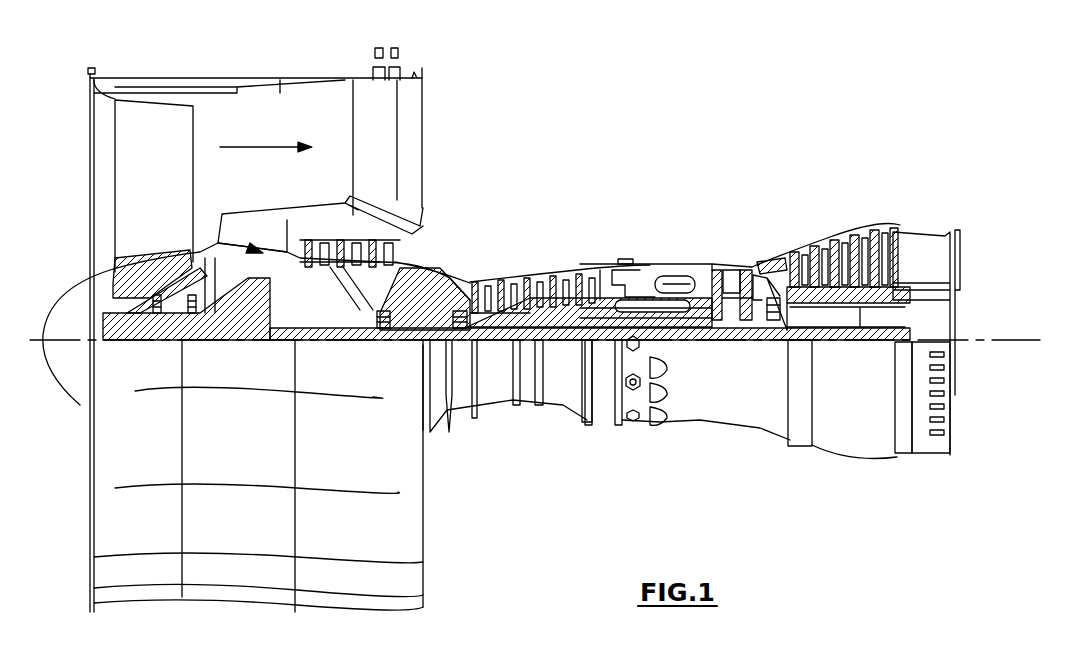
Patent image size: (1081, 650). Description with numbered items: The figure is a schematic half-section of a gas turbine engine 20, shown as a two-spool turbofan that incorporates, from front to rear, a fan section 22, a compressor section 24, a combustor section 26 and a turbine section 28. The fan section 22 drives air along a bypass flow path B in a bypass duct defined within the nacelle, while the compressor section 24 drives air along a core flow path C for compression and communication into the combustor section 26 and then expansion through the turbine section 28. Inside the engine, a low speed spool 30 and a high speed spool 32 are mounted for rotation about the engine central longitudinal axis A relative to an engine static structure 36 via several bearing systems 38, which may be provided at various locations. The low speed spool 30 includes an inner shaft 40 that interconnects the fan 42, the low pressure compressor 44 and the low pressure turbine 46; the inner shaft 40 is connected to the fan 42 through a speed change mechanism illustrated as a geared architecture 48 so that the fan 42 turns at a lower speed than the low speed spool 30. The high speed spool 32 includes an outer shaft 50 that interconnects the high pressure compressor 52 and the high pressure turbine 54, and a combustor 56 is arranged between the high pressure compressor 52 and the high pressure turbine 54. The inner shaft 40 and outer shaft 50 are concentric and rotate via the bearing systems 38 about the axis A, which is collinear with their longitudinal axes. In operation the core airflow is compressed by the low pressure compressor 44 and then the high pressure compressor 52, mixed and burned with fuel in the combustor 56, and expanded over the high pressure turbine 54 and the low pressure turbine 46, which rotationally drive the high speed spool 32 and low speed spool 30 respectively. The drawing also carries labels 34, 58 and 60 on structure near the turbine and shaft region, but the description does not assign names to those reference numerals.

The gas turbine engine 20 is at (680, 128).
The fan section 22 is at (280, 53).
The compressor section 24 is at (290, 188).
The combustor section 26 is at (703, 188).
The turbine section 28 is at (907, 188).
The low speed spool 30 is at (565, 357).
The high speed spool 32 is at (605, 275).
The inner shaft 34 is at (862, 308).
The engine static structure 36 is at (601, 430).
The bearing systems 38 is at (160, 315).
The inner shaft 40 is at (446, 400).
The fan 42 is at (168, 198).
The low pressure compressor 44 is at (399, 211).
The low pressure turbine 46 is at (847, 247).
The geared architecture 48 is at (260, 325).
The outer shaft 50 is at (674, 323).
The high pressure compressor 52 is at (540, 282).
The high pressure turbine 54 is at (732, 270).
The combustor 56 is at (672, 288).
The mid-turbine frame 58 is at (774, 248).
The airfoils 60 is at (782, 305).
The engine central longitudinal axis A is at (1036, 340).
The bypass flow path B is at (252, 146).
The core flow path C is at (255, 249).